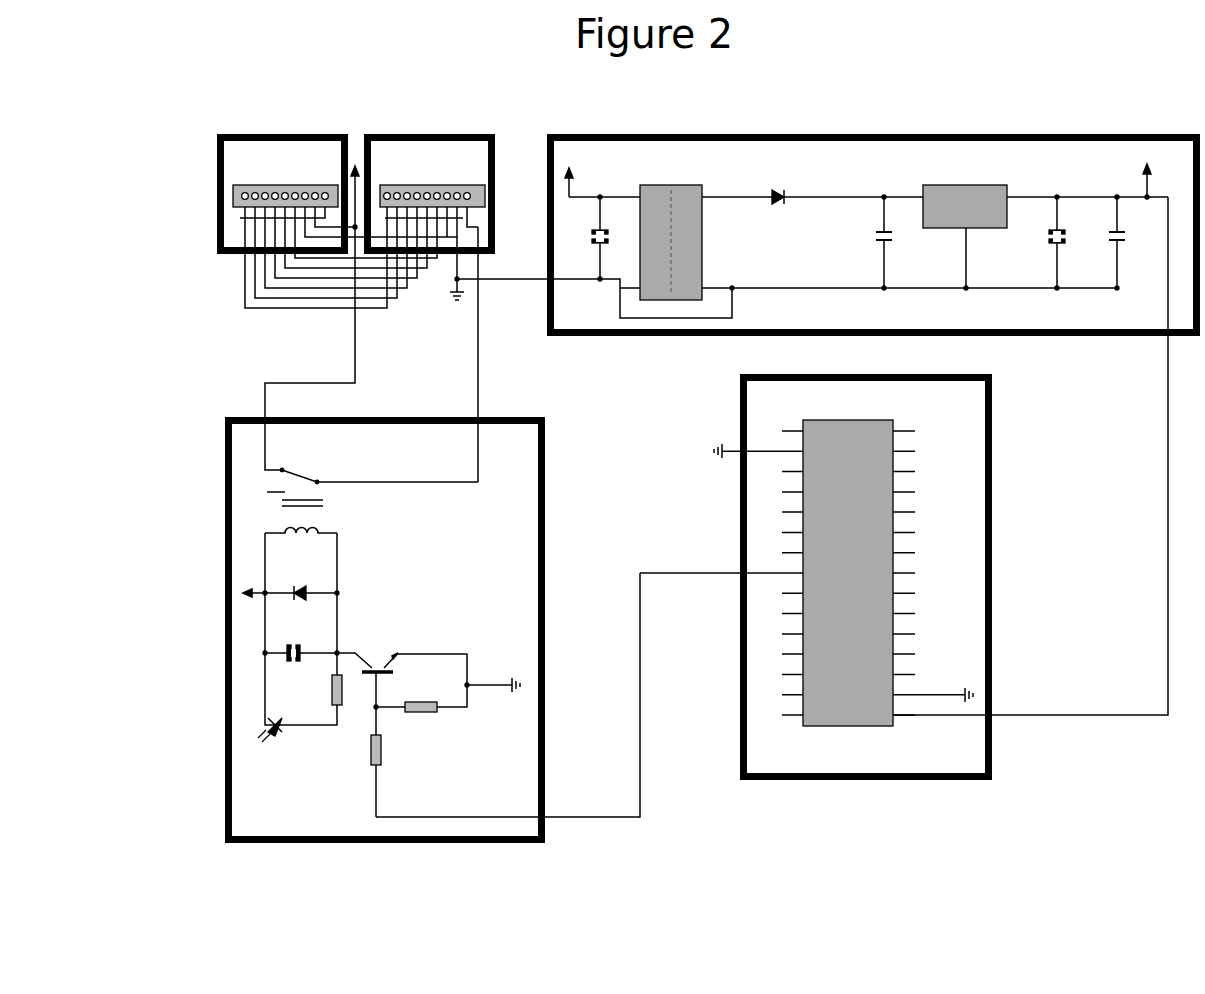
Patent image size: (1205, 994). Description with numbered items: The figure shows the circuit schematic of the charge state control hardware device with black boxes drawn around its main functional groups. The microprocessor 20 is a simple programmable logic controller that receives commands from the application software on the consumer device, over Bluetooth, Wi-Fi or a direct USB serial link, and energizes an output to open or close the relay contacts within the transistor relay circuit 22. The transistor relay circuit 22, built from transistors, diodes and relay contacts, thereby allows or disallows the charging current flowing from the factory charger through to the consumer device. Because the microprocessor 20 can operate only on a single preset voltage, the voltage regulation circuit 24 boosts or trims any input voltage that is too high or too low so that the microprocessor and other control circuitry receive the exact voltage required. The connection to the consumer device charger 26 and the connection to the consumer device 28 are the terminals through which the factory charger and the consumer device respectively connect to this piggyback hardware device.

The microprocessor 20 is at (990, 512).
The transistor relay circuit 22 is at (322, 843).
The voltage regulation circuit 24 is at (908, 134).
The connection to the consumer device charger 26 is at (262, 134).
The connection to the consumer device 28 is at (428, 134).